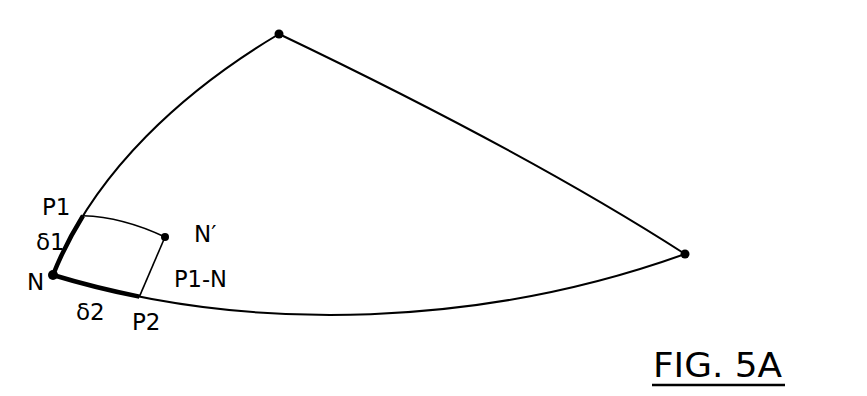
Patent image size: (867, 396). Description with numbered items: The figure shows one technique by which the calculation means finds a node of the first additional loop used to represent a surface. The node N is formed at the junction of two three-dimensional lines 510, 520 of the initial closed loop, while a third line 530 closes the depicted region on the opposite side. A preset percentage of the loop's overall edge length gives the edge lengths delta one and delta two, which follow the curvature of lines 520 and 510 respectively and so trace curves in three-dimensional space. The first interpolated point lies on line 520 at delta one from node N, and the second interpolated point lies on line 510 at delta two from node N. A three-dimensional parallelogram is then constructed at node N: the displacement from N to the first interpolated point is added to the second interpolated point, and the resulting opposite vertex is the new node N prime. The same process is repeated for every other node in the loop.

The line 510 is at (348, 314).
The line 520 is at (171, 110).
The upper right boundary segment 530 is at (498, 143).